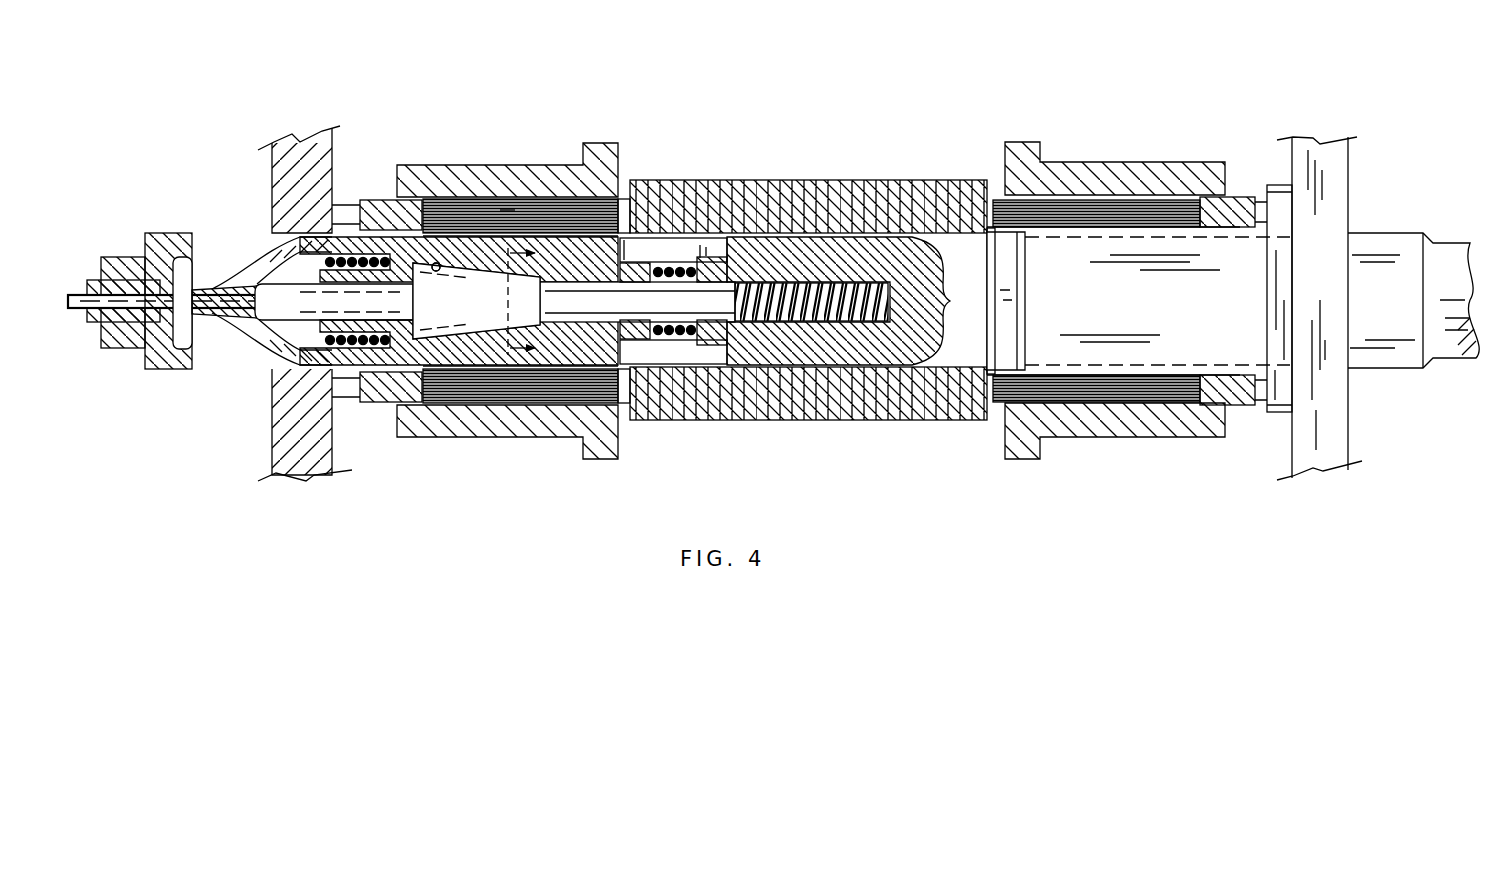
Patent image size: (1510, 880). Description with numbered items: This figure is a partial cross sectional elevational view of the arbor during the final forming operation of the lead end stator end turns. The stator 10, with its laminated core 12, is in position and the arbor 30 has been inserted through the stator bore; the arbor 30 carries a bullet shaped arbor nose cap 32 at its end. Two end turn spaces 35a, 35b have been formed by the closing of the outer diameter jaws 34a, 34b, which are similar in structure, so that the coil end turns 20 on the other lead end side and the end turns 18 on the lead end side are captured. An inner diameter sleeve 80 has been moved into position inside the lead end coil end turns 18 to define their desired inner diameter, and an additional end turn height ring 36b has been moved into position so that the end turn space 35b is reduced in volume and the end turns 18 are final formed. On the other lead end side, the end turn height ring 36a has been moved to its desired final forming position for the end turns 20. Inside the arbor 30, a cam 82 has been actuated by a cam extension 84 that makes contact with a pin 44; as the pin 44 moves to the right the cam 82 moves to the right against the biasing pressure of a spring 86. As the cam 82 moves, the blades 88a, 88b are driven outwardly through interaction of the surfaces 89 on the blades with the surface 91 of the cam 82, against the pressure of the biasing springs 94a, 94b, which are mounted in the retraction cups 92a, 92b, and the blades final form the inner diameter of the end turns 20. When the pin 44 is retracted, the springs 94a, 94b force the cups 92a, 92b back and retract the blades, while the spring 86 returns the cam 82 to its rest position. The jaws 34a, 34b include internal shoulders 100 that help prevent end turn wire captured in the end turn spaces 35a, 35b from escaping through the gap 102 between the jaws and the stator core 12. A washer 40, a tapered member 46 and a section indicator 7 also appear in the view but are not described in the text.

The stator 10 is at (972, 124).
The core 12 is at (898, 200).
The end turns 18 is at (1070, 213).
The end turns 20 is at (480, 258).
The arbor 30 is at (1447, 262).
The arbor nose cap 32 is at (278, 340).
The outer diameter jaw 34a is at (490, 422).
The outer diameter jaw 34b is at (1172, 187).
The end turn space 35a is at (555, 395).
The end turn space 35b is at (1110, 395).
The end turn height ring 36a is at (376, 200).
The end turn height ring 36b is at (1237, 408).
The washer 40 is at (165, 238).
The pin 44 is at (118, 300).
The adapter 46 is at (228, 298).
The inner diameter sleeve 80 is at (1157, 312).
The cam 82 is at (447, 312).
The cam extension 84 is at (298, 303).
The spring 86 is at (778, 285).
The blade 88a is at (567, 212).
The blade 88b is at (460, 345).
The surfaces 89 is at (438, 262).
The surface 91 is at (503, 205).
The retraction cup 92a is at (352, 346).
The retraction cup 92b is at (652, 342).
The biasing spring 94a is at (349, 256).
The biasing spring 94b is at (667, 262).
The internal shoulders 100 is at (622, 205).
The gap 102 is at (622, 420).
The section line 7- 7 is at (531, 301).